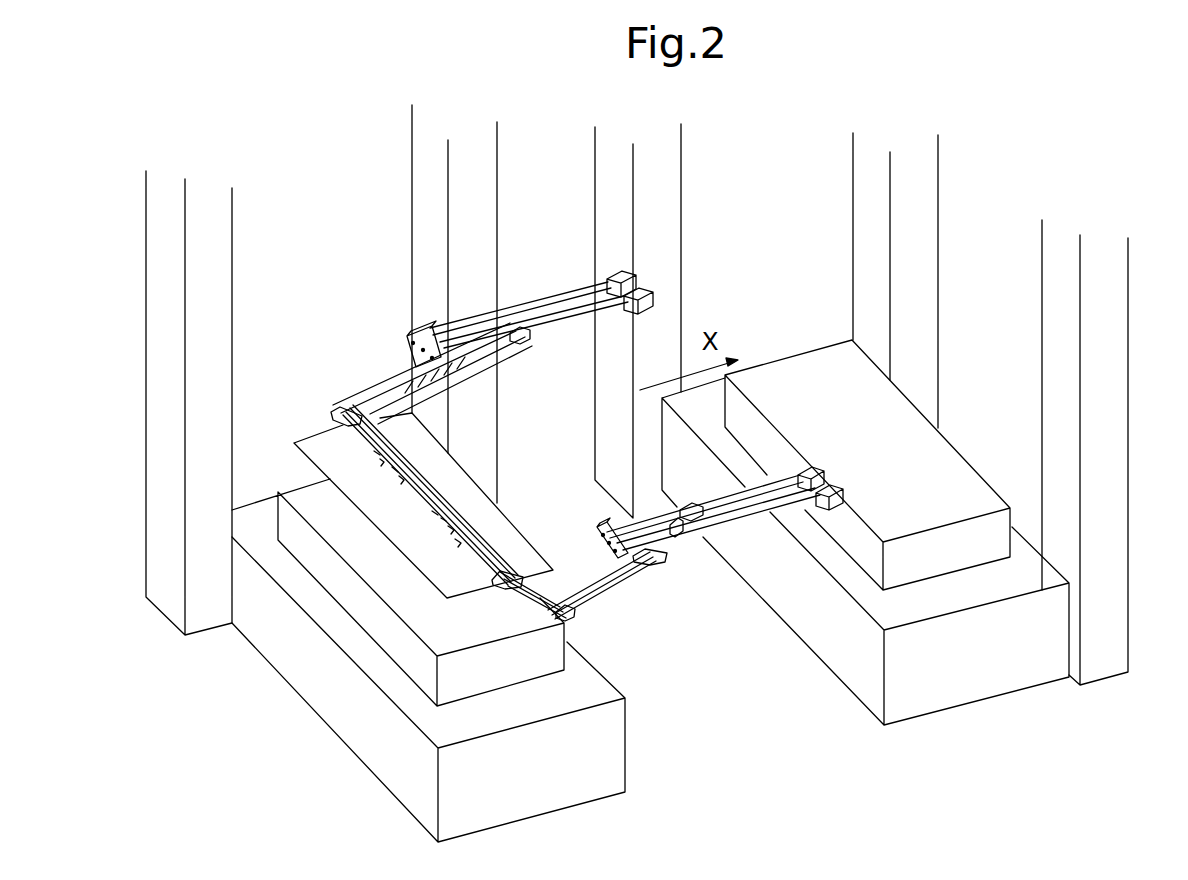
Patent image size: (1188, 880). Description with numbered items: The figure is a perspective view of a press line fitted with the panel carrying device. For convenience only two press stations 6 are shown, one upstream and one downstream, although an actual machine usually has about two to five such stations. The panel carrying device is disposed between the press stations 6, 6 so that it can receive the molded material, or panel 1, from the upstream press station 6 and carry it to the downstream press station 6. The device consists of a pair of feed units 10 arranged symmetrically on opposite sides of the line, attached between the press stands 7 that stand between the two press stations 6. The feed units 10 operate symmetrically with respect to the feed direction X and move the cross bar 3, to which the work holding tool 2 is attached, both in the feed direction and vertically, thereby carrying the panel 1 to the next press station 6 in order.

The molded material (panel) 1 is at (317, 447).
The work holding tool 2 is at (460, 547).
The cross bar 3 is at (465, 530).
The press station 6 is at (585, 685).
The press stand 7 is at (157, 250).
The feed unit 10 is at (405, 325).